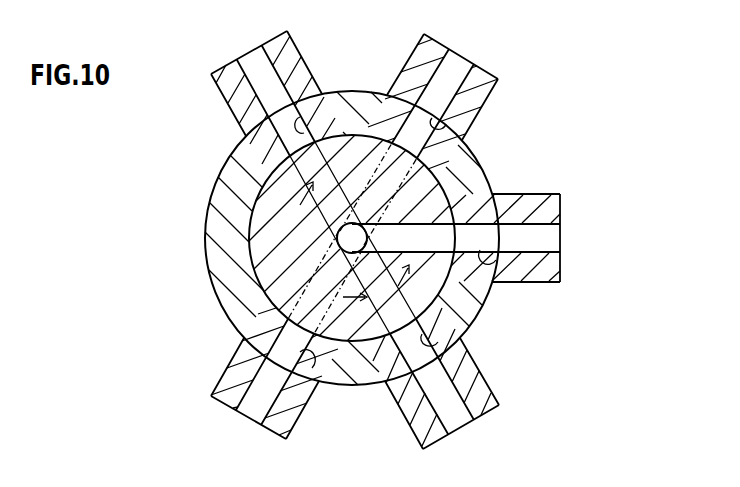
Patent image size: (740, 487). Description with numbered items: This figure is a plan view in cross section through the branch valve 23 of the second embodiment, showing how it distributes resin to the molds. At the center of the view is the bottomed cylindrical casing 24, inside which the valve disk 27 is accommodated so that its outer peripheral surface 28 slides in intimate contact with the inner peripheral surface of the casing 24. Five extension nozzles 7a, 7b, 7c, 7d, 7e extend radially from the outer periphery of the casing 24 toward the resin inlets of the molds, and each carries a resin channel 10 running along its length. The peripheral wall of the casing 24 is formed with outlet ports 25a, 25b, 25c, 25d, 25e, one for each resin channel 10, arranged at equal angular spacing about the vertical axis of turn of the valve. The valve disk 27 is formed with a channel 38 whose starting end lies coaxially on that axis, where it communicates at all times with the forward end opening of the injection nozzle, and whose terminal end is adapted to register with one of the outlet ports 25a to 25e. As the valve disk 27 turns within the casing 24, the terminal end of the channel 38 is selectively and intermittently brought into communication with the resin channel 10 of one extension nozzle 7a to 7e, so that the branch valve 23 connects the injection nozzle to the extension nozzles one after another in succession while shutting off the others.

The resin channel 10 is at (256, 70).
The extension nozzle 7a is at (220, 387).
The extension nozzle 7b is at (485, 400).
The extension nozzle 7c is at (537, 205).
The extension nozzle 7d is at (475, 92).
The extension nozzle 7e is at (288, 57).
The branch valve 23 is at (212, 158).
The bottomed cylindrical casing 24 is at (225, 222).
The outlet port 25a is at (310, 383).
The outlet port 25b is at (440, 340).
The outlet port 25c is at (502, 268).
The outlet port 25d is at (455, 120).
The outlet port 25e is at (302, 130).
The valve disk 27 is at (232, 305).
The outer peripheral surface 28 is at (245, 262).
The channel 38 is at (468, 182).